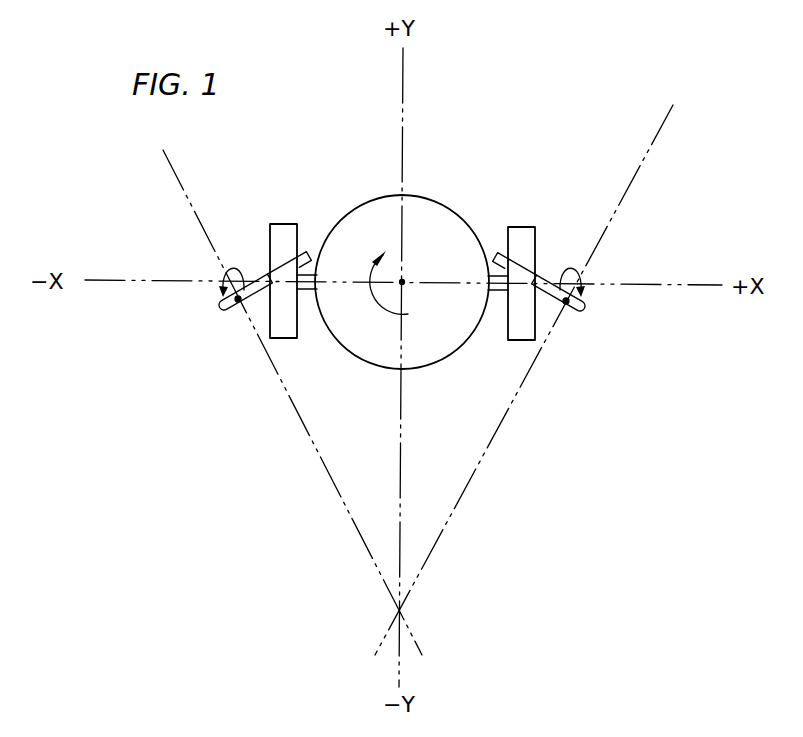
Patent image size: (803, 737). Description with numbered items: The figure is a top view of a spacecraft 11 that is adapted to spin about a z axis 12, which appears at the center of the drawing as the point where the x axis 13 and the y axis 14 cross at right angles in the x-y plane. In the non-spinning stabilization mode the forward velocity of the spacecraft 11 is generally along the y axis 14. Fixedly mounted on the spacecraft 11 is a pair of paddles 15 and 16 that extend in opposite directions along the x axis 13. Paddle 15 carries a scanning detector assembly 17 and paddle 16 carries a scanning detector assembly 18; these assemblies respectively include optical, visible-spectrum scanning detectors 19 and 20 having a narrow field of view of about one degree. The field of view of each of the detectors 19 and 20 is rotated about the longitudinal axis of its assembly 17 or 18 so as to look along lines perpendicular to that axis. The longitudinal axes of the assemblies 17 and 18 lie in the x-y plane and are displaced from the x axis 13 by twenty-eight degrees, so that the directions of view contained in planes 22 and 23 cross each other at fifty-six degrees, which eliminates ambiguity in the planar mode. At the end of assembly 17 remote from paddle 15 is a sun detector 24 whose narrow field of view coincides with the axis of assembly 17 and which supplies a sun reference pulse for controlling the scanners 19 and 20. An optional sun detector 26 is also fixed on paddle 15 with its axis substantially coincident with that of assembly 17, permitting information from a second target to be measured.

The spacecraft 11 is at (453, 213).
The z axis 12 is at (403, 282).
The x axis 13 is at (682, 285).
The y axis 14 is at (403, 78).
The paddle 15 is at (287, 338).
The paddle 16 is at (523, 340).
The scanning detector assembly 17 is at (254, 282).
The scanning detector assembly 18 is at (548, 282).
The scanning detector 19 is at (240, 303).
The scanning detector 20 is at (570, 306).
The direction of view plane 22 is at (172, 166).
The direction of view plane 23 is at (622, 203).
The sun detector 24 is at (208, 306).
The sun detector 26 is at (306, 250).